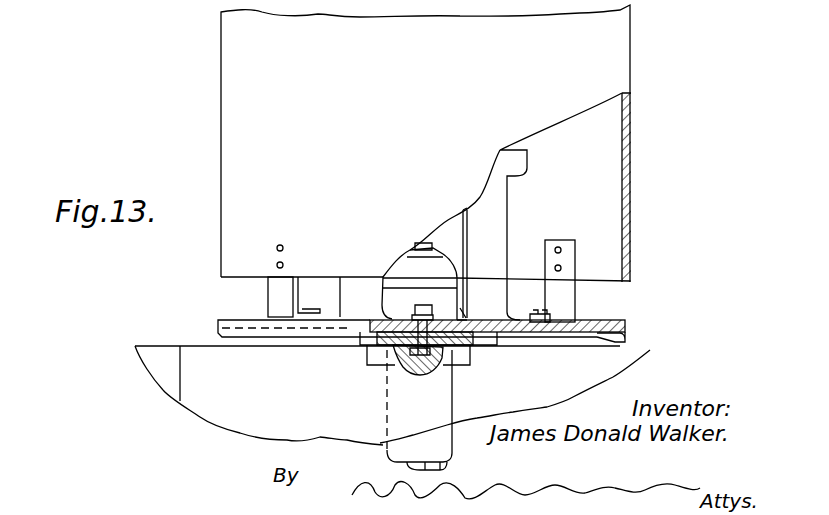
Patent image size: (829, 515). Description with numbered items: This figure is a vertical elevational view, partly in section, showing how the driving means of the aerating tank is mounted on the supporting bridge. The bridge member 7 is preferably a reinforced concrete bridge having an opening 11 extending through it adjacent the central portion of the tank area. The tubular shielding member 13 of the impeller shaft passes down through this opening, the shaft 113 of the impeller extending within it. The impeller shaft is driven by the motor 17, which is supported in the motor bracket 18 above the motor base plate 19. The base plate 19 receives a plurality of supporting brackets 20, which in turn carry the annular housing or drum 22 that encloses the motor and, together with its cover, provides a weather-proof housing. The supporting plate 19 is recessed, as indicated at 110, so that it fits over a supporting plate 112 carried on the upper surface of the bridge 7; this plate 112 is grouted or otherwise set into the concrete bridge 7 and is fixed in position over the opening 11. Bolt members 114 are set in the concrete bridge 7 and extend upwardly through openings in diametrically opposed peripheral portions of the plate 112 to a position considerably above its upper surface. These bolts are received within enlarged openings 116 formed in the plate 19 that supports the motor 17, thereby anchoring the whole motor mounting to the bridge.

The bridge member 7 is at (162, 357).
The opening 11 is at (342, 432).
The tubular shielding member 13 is at (438, 398).
The motor 17 is at (450, 267).
The motor bracket 18 is at (493, 203).
The motor base plate 19 is at (622, 325).
The supporting bracket 20 is at (277, 296).
The annular housing 22 is at (613, 176).
The recess 110 is at (602, 343).
The supporting plate 112 is at (353, 352).
The impeller shaft 113 is at (400, 465).
The bolt member 114 is at (378, 367).
The enlarged opening 116 is at (460, 320).